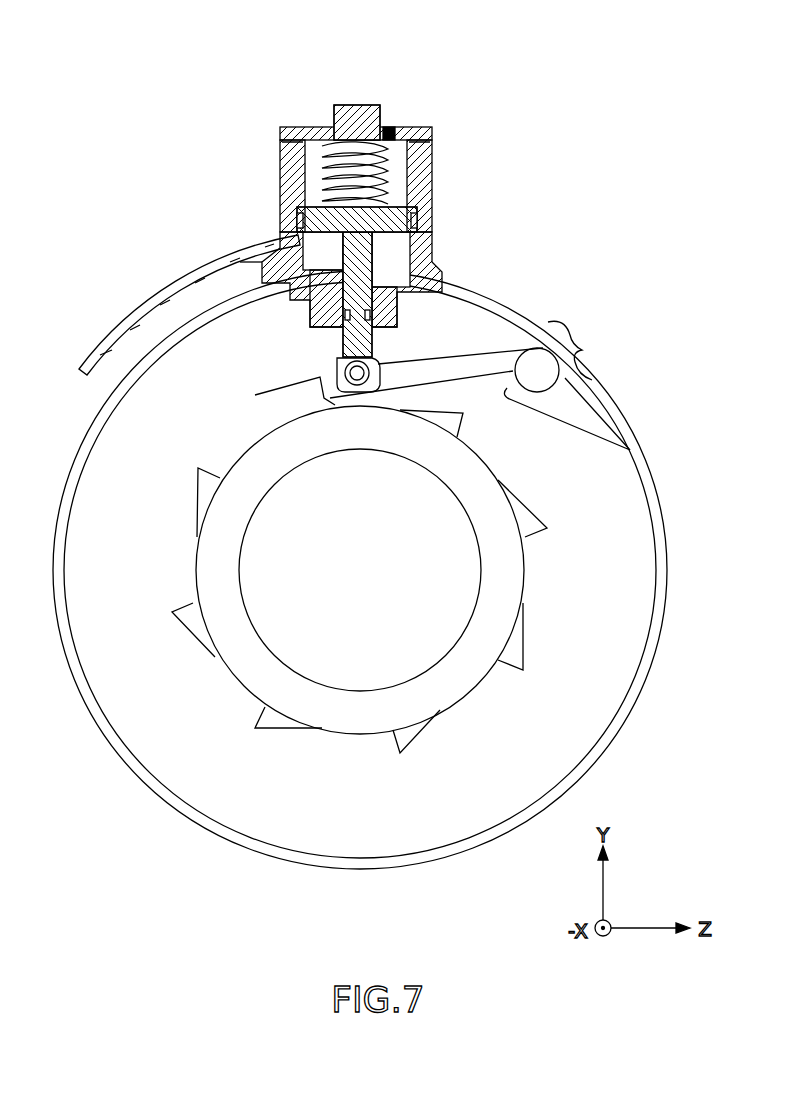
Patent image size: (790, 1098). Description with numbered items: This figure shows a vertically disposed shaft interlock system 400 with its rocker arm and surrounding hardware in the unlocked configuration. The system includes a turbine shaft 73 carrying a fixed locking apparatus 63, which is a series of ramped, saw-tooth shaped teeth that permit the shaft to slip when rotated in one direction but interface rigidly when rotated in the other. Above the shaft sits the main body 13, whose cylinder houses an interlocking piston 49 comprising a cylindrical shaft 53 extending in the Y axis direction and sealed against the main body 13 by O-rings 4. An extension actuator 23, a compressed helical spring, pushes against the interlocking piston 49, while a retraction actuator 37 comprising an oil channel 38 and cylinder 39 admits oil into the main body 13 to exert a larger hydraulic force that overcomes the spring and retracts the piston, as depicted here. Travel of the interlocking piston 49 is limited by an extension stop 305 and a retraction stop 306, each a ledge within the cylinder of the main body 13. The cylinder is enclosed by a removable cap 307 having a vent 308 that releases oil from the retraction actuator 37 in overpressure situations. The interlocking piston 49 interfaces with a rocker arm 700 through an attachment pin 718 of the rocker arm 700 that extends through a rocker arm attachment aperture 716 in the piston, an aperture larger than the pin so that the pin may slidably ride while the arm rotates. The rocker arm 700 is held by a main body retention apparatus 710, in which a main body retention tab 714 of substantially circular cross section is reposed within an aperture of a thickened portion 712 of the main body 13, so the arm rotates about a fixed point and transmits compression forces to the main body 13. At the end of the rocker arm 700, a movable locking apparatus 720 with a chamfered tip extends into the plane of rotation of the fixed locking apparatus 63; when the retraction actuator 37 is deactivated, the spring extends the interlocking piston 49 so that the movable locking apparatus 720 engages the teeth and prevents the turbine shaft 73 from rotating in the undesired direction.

The shaft interlock system 400 is at (220, 88).
The cap 307 is at (352, 110).
The vent 308 is at (391, 127).
The extension actuator 23 is at (330, 150).
The retraction stop 306 is at (285, 180).
The main body 13 is at (407, 179).
The extension stop 305 is at (297, 222).
The oil channel 38 is at (262, 262).
The interlocking piston 49 is at (375, 245).
The cylindrical shaft 53 is at (365, 285).
The rocker arm 700 is at (485, 345).
The main body retention apparatus 710 is at (582, 348).
The main body retention tab 714 is at (570, 375).
The thickened portion 712 is at (575, 398).
The cylinder 39 is at (312, 305).
The O-rings 4 is at (343, 320).
The attachment pin 718 is at (366, 367).
The rocker arm attachment aperture 716 is at (364, 374).
The movable locking apparatus 720 is at (330, 380).
The fixed locking apparatus 63 is at (527, 566).
The turbine shaft 73 is at (498, 607).
The retraction actuator 37 is at (92, 378).